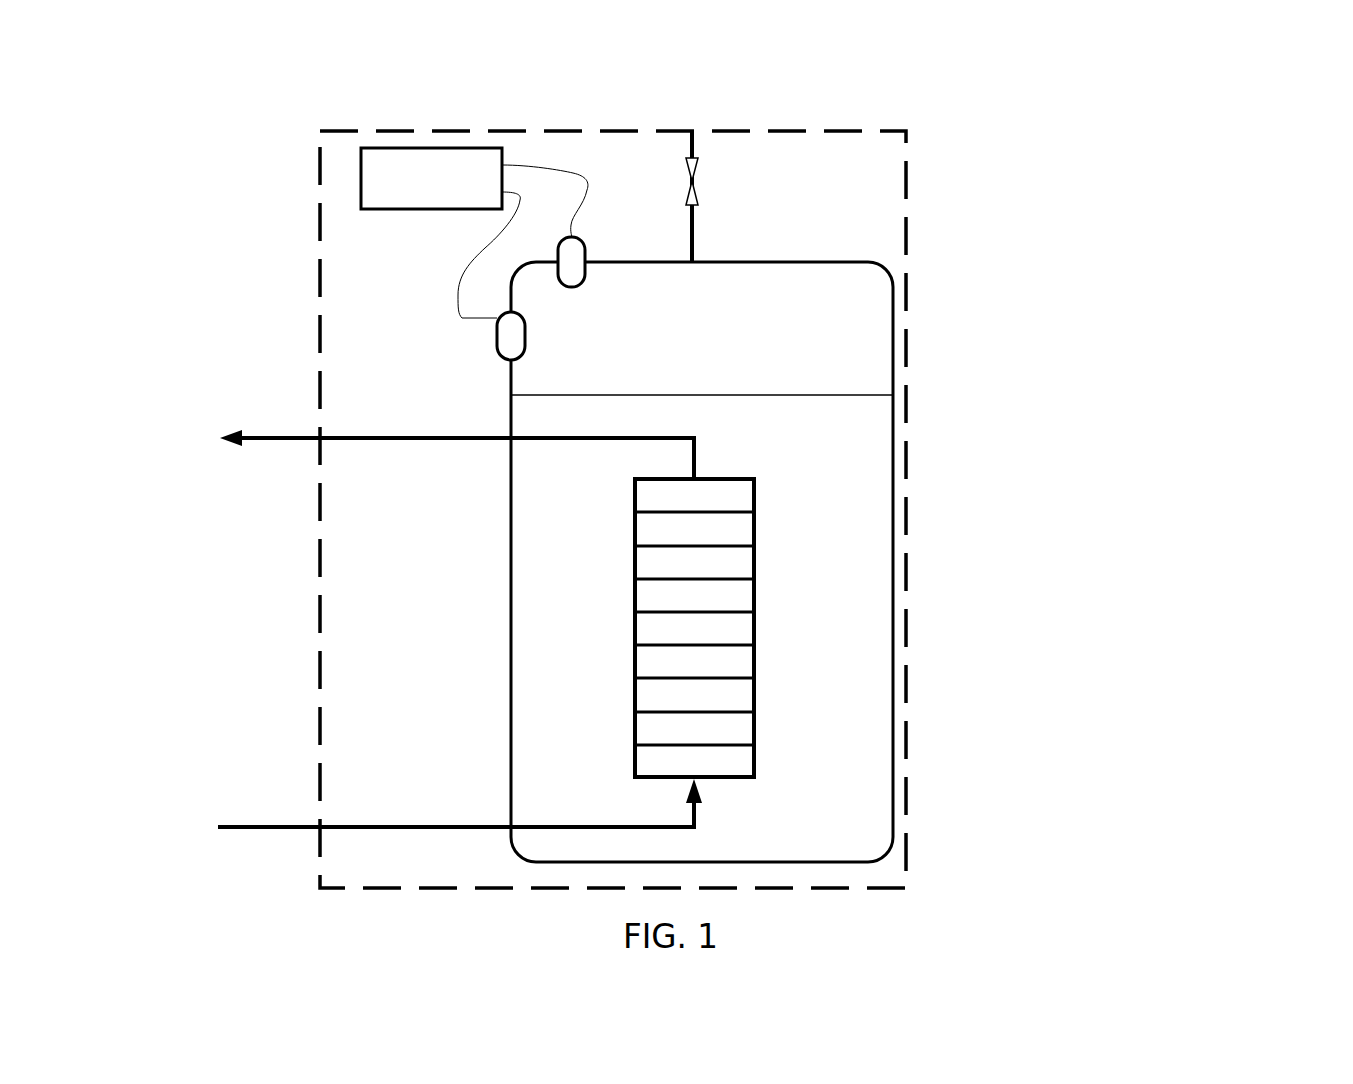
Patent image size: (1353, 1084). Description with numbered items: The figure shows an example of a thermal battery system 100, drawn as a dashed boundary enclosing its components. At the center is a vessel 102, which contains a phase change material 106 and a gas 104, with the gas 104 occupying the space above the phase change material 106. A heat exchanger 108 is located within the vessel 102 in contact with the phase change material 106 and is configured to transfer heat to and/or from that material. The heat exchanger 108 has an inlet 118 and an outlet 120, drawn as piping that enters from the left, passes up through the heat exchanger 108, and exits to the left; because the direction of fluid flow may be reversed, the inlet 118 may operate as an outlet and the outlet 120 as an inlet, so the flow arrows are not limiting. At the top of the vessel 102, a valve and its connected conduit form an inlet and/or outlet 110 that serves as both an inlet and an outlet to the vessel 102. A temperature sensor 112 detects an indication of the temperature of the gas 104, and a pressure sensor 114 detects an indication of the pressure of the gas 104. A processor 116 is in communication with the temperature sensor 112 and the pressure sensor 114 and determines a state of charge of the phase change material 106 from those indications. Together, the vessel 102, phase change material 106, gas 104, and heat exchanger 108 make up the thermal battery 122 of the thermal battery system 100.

The thermal battery system 100 is at (968, 831).
The vessel 102 is at (870, 260).
The gas 104 is at (848, 347).
The phase change material 106 is at (830, 633).
The heat exchanger 108 is at (757, 689).
The inlet and/or outlet 110 is at (695, 178).
The temperature sensor 112 is at (573, 262).
The pressure sensor 114 is at (510, 335).
The processor 116 is at (433, 148).
The inlet 118 is at (286, 814).
The outlet 120 is at (300, 431).
The thermal battery 122 is at (871, 504).